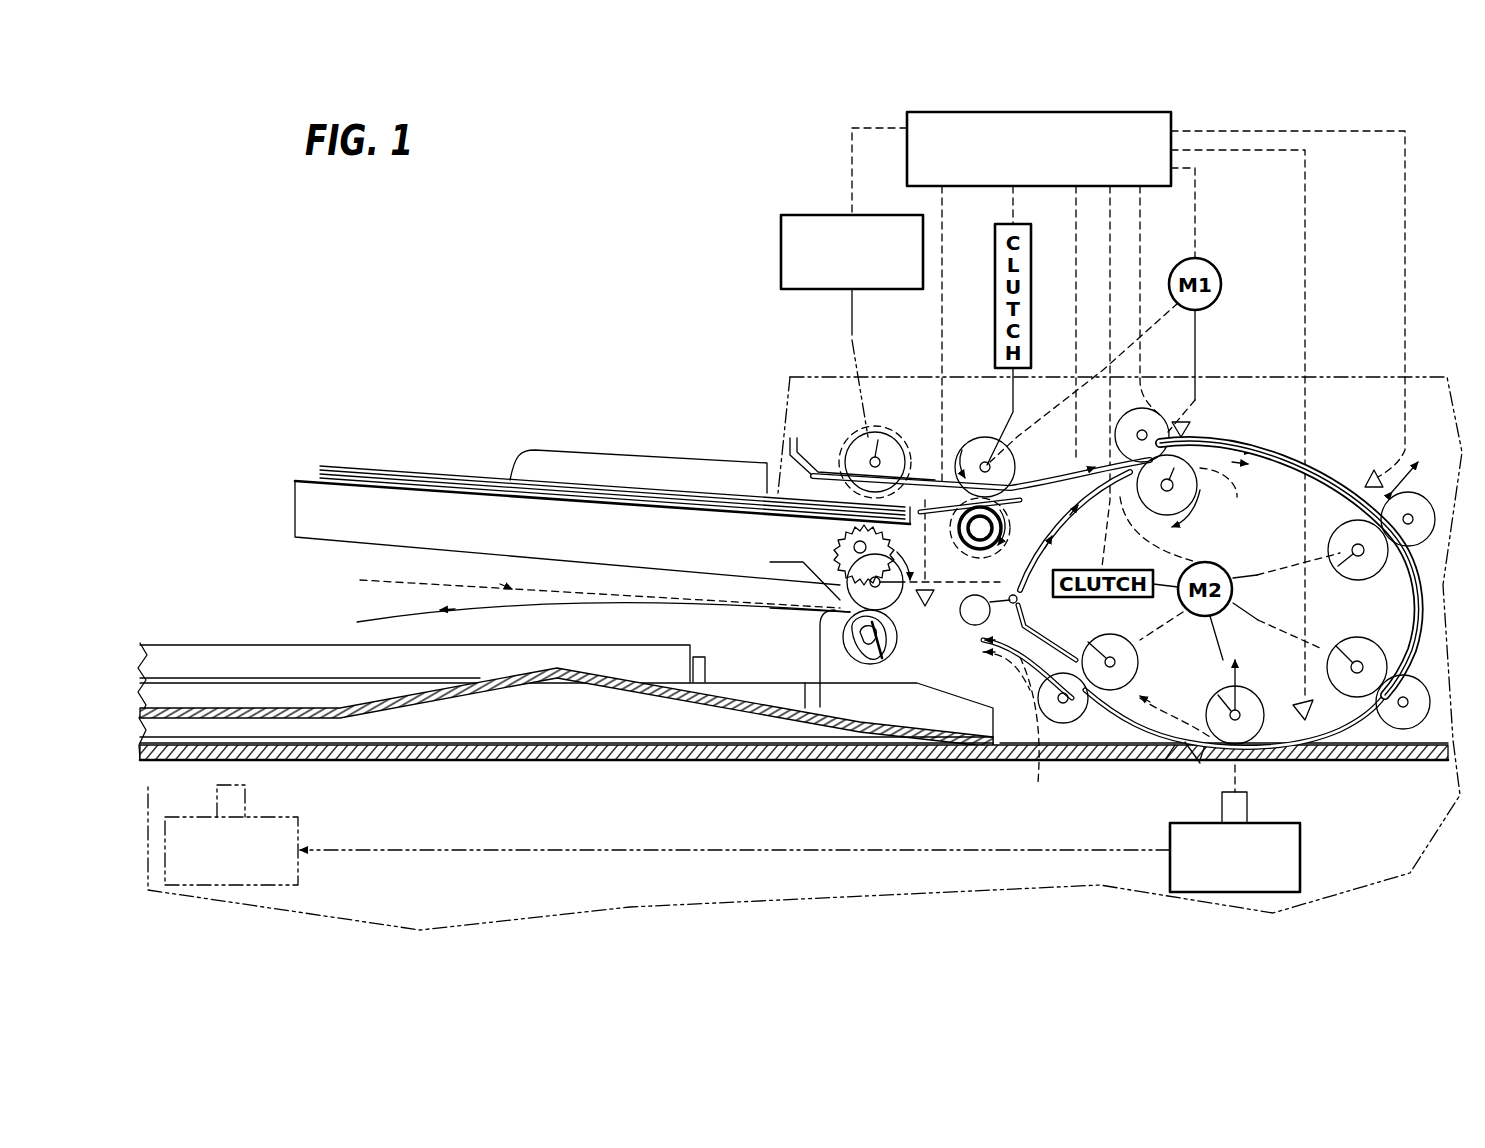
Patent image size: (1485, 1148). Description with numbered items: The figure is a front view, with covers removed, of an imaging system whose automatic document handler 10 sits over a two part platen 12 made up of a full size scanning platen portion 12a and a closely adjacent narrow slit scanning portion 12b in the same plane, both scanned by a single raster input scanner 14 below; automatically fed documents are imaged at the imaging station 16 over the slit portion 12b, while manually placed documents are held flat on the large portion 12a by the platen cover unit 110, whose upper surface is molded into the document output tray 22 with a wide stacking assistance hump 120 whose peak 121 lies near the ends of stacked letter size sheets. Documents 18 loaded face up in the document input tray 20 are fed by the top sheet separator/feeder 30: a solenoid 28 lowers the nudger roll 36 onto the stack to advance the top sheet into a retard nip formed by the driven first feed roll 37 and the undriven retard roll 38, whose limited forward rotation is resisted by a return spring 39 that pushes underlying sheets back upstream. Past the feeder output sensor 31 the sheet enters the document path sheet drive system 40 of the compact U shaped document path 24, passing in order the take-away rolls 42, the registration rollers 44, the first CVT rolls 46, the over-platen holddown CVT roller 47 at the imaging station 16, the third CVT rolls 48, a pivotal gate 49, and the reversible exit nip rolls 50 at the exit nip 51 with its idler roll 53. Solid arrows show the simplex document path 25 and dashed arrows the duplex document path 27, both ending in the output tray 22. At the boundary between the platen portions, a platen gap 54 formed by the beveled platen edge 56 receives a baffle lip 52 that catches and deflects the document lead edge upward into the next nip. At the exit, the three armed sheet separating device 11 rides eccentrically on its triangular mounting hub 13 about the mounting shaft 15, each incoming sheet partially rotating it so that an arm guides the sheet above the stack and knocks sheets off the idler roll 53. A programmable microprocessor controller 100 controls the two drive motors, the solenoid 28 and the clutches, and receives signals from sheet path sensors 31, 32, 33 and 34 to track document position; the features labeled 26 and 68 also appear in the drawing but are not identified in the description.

The document handler 10 is at (612, 274).
The programmable microprocessor controller 100 is at (1080, 112).
The solenoid 28 is at (781, 252).
The top sheet separator/feeder 30 is at (884, 392).
The documents 18 is at (510, 482).
The document input tray 20 is at (377, 493).
The document output tray 22 is at (710, 690).
The platen cover unit 110 is at (540, 707).
The stacking assistance hump 120 is at (500, 712).
The peak 121 is at (558, 672).
The platen 12 is at (689, 770).
The full size scanning platen portion 12a is at (558, 760).
The narrow slit scanning platen portion 12b is at (1340, 765).
The raster input scanner 14 is at (1290, 855).
The imaging station 16 is at (1270, 774).
The simplex document path 25 is at (547, 600).
The return document path 26 is at (450, 578).
The nudger roll 36 is at (860, 462).
The driven first feed roll 37 is at (983, 455).
The retard roll 38 is at (982, 542).
The return spring 39 is at (956, 535).
The reversible exit nip rolls 50 is at (833, 578).
The exit nip 51 is at (838, 606).
The exit nip idler roll 53 is at (845, 633).
The mounting shaft 15 is at (868, 660).
The sheet separating device 11 is at (865, 650).
The triangular mounting hub 13 is at (882, 652).
The sheet path sensor 34 is at (942, 600).
The pivotal gate 49 is at (1022, 612).
The duplex document path 27 is at (1058, 520).
The feeder output sensor 31 is at (1183, 428).
The document path sheet drive system 40 is at (1152, 392).
The sheet path sensor 32 is at (1367, 480).
The take-away rolls 42 is at (1196, 505).
The registration rollers 44 is at (1342, 542).
The first CVT rolls 46 is at (1353, 643).
The third CVT rolls 48 is at (1112, 633).
The inverter roller 68 is at (1214, 700).
The over-platen CVT roller 47 is at (1240, 684).
The sheet path sensor 33 is at (1300, 712).
The platen gap 54 is at (1183, 738).
The beveled platen edge 56 is at (1170, 765).
The baffle lip 52 is at (1203, 762).
The U shaped document path 24 is at (1422, 628).